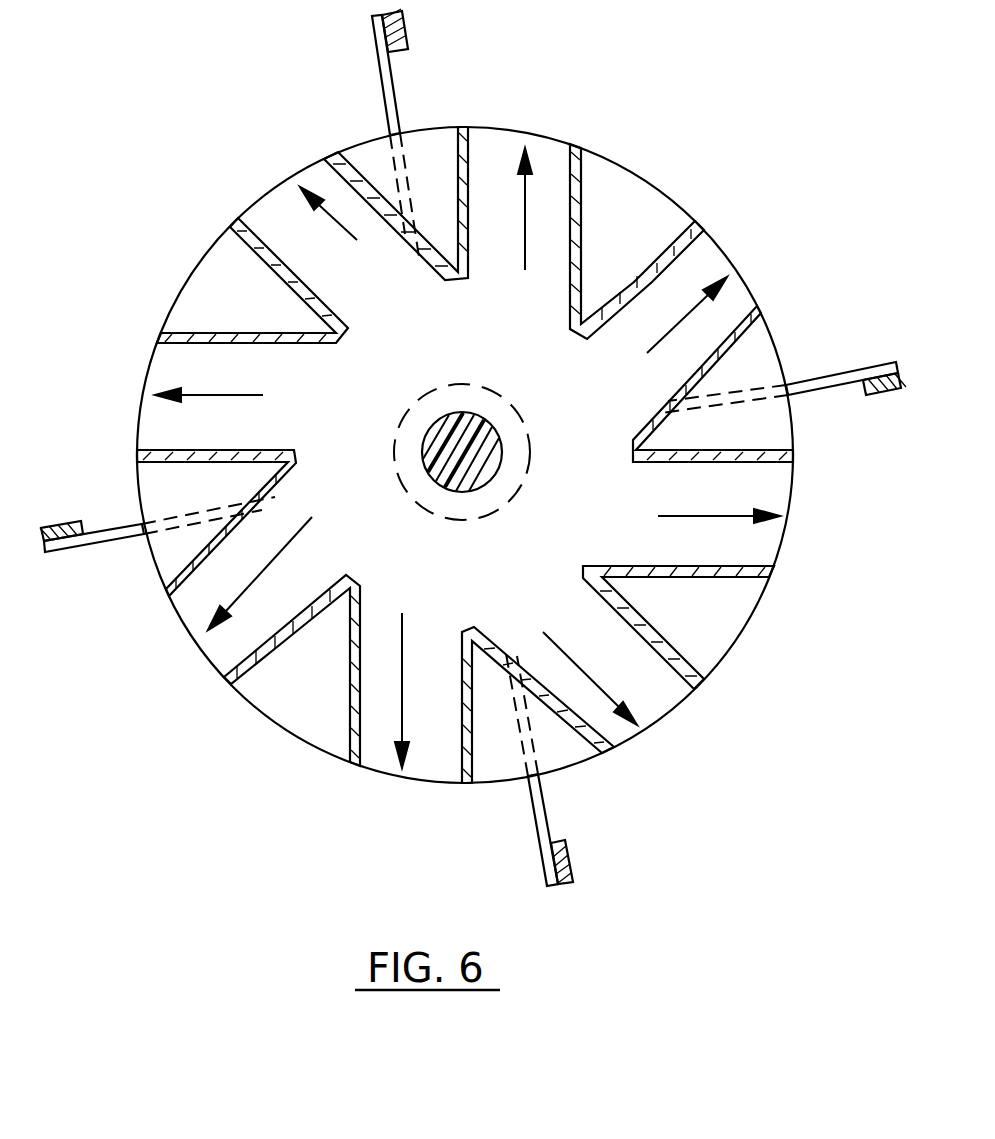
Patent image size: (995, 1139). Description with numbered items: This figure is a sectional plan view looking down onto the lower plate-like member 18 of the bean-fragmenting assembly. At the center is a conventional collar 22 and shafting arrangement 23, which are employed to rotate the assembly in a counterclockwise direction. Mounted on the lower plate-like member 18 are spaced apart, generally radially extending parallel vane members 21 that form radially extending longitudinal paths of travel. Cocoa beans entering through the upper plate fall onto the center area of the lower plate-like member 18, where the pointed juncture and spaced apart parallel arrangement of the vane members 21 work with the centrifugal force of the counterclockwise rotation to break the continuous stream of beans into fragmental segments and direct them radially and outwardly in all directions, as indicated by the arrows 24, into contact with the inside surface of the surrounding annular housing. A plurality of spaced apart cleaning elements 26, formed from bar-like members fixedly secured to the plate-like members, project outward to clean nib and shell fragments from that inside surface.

The lower plate-like member 18 is at (617, 163).
The vane members 21 is at (320, 293).
The collar 22 is at (505, 540).
The shafting arrangement 23 is at (487, 420).
The arrows 24 is at (467, 458).
The cleaning elements 26 is at (393, 67).